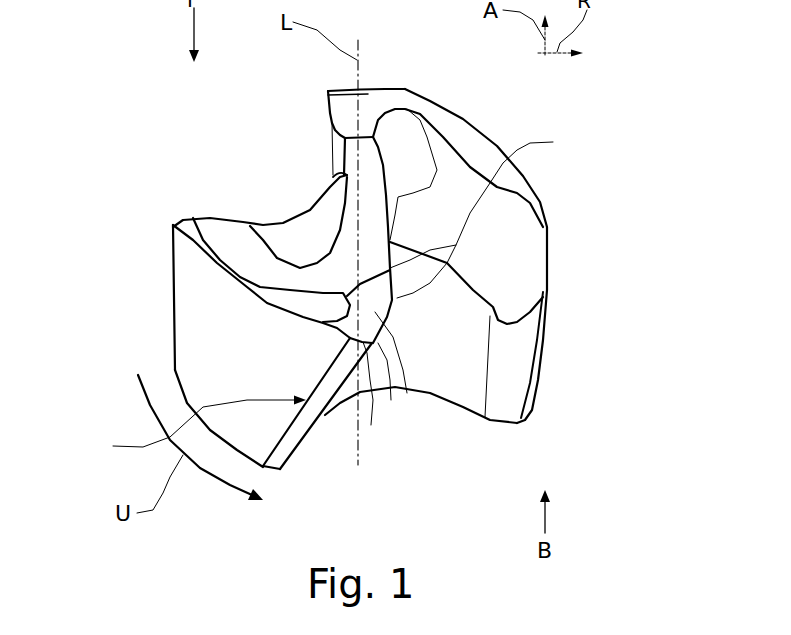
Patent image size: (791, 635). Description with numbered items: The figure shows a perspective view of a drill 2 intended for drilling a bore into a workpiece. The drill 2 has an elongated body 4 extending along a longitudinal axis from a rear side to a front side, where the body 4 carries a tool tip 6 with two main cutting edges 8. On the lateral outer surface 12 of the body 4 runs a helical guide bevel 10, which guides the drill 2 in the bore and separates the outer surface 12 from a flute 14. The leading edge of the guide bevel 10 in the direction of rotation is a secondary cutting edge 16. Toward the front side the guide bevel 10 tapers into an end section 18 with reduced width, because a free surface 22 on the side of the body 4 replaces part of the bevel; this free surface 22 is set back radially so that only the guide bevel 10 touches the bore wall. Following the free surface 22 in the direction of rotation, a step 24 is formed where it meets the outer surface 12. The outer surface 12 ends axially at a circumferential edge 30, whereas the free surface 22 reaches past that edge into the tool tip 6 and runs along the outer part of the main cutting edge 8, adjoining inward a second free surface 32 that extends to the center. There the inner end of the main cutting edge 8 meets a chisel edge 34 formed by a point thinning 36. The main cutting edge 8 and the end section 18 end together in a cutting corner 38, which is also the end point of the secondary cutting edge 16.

The drill 2 is at (175, 188).
The body 4 is at (175, 317).
The tool tip 6 is at (283, 192).
The main cutting edge 8 is at (332, 112).
The guide bevel 10 is at (278, 468).
The outer surface 12 is at (185, 283).
The flute 14 is at (470, 398).
The secondary cutting edge 16 is at (298, 447).
The end section 18 is at (371, 425).
The free surface 22 is at (407, 393).
The step 24 is at (195, 426).
The circumferential edge 30 is at (172, 247).
The second free surface 32 is at (227, 230).
The chisel edge 34 is at (380, 150).
The point thinning 36 is at (530, 275).
The cutting corner 38 is at (391, 400).